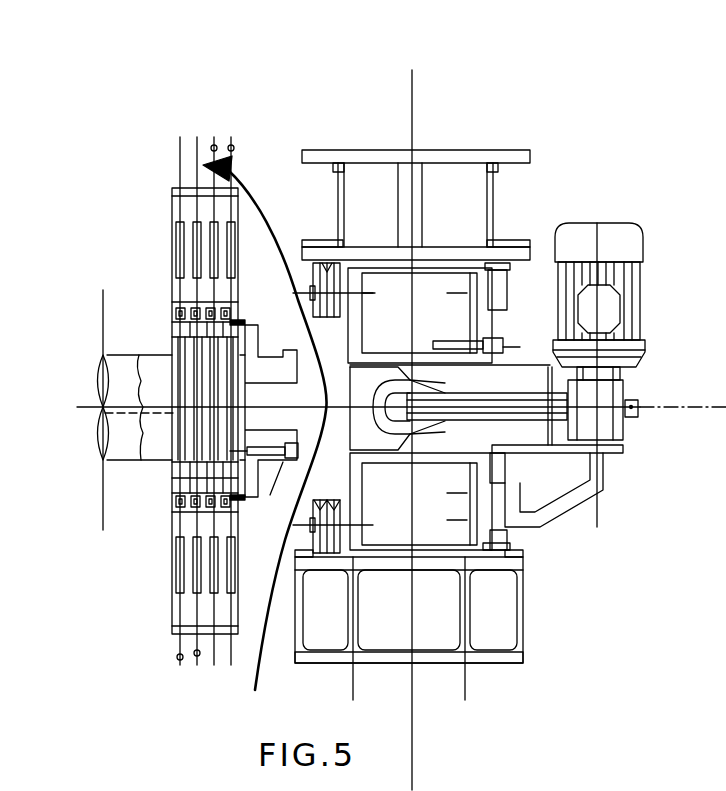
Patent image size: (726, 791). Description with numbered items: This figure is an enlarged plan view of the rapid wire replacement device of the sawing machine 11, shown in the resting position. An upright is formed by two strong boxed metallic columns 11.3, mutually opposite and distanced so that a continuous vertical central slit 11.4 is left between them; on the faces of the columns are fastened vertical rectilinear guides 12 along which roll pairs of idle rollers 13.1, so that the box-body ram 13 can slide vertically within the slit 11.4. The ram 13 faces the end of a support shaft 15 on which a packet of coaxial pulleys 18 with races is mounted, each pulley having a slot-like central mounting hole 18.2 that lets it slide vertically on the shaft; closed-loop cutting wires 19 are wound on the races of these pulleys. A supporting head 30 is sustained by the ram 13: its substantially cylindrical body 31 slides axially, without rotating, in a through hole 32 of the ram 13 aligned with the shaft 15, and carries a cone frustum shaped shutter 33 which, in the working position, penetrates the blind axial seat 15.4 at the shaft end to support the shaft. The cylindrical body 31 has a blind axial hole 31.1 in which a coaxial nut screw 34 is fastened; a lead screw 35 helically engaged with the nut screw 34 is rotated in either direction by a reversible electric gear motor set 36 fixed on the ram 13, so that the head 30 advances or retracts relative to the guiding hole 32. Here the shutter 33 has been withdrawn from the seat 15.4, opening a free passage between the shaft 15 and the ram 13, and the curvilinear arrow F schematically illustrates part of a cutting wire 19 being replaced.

The machine 11 is at (553, 566).
The column 11.3 is at (498, 150).
The slit 11.4 is at (500, 323).
The rectilinear guide 12 is at (308, 258).
The ram 13 is at (338, 341).
The idle roller 13.1 is at (342, 312).
The support shaft 15 is at (165, 355).
The blind axial hole 15.4 is at (292, 394).
The pulley 18 is at (188, 186).
The slot-like central mounting hole 18.2 is at (172, 468).
The cutting wire 19 is at (214, 145).
The supporting head 30 is at (520, 465).
The cylindrical body 31 is at (498, 373).
The blind axial hole 31.1 is at (428, 392).
The through hole 32 is at (352, 445).
The shutter 33 is at (373, 381).
The nut screw 34 is at (500, 420).
The lead screw 35 is at (560, 440).
The electric gear motor set 36 is at (643, 302).
The curvilinear arrow F is at (272, 570).